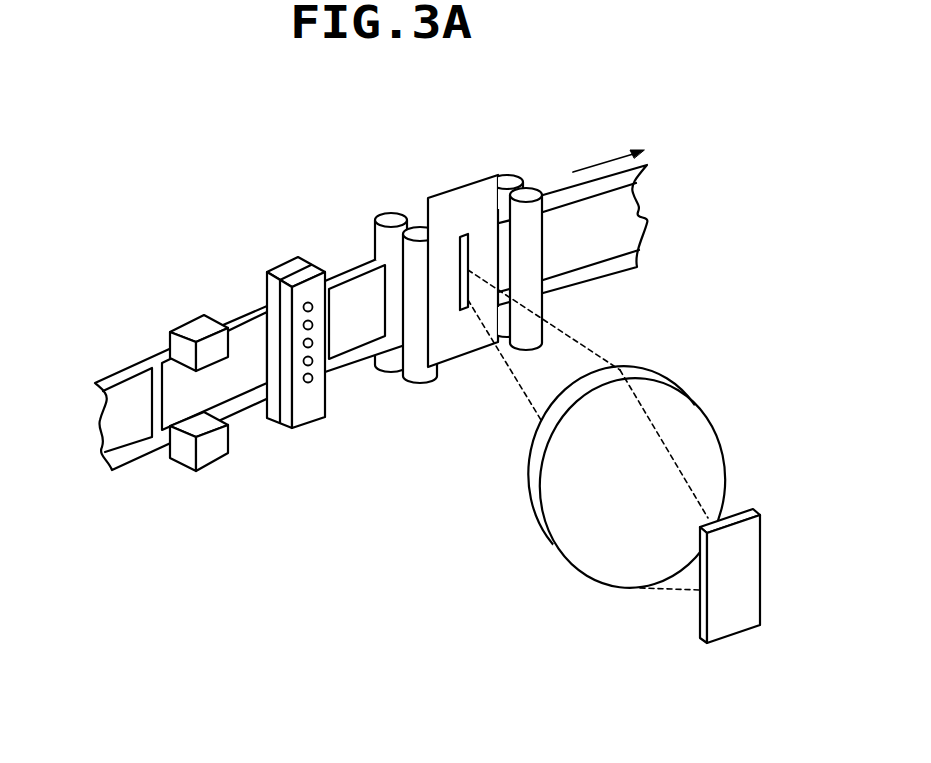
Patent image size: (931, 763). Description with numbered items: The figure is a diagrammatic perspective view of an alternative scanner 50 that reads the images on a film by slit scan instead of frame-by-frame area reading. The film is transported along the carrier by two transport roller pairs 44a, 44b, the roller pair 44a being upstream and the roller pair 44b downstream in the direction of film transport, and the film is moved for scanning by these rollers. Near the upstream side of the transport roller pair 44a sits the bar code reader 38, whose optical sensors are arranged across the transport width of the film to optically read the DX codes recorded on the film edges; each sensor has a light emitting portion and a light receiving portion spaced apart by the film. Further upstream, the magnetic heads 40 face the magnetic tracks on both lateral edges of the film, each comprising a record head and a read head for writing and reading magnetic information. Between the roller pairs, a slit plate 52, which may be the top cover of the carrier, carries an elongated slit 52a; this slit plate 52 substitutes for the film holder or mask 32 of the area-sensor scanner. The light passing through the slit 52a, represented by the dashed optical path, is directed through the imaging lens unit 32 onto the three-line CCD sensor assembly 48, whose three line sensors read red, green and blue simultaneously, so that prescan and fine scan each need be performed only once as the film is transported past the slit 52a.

The imaging lens unit 32 is at (677, 412).
The bar code reader 38 is at (290, 268).
The magnetic heads 40 is at (195, 330).
The transport roller pair 44a is at (418, 367).
The transport roller pair 44b is at (526, 272).
The three-line CCD sensor assembly 48 is at (743, 567).
The scanner 50 is at (472, 265).
The slit plate 52 is at (462, 340).
The slit 52a is at (463, 236).